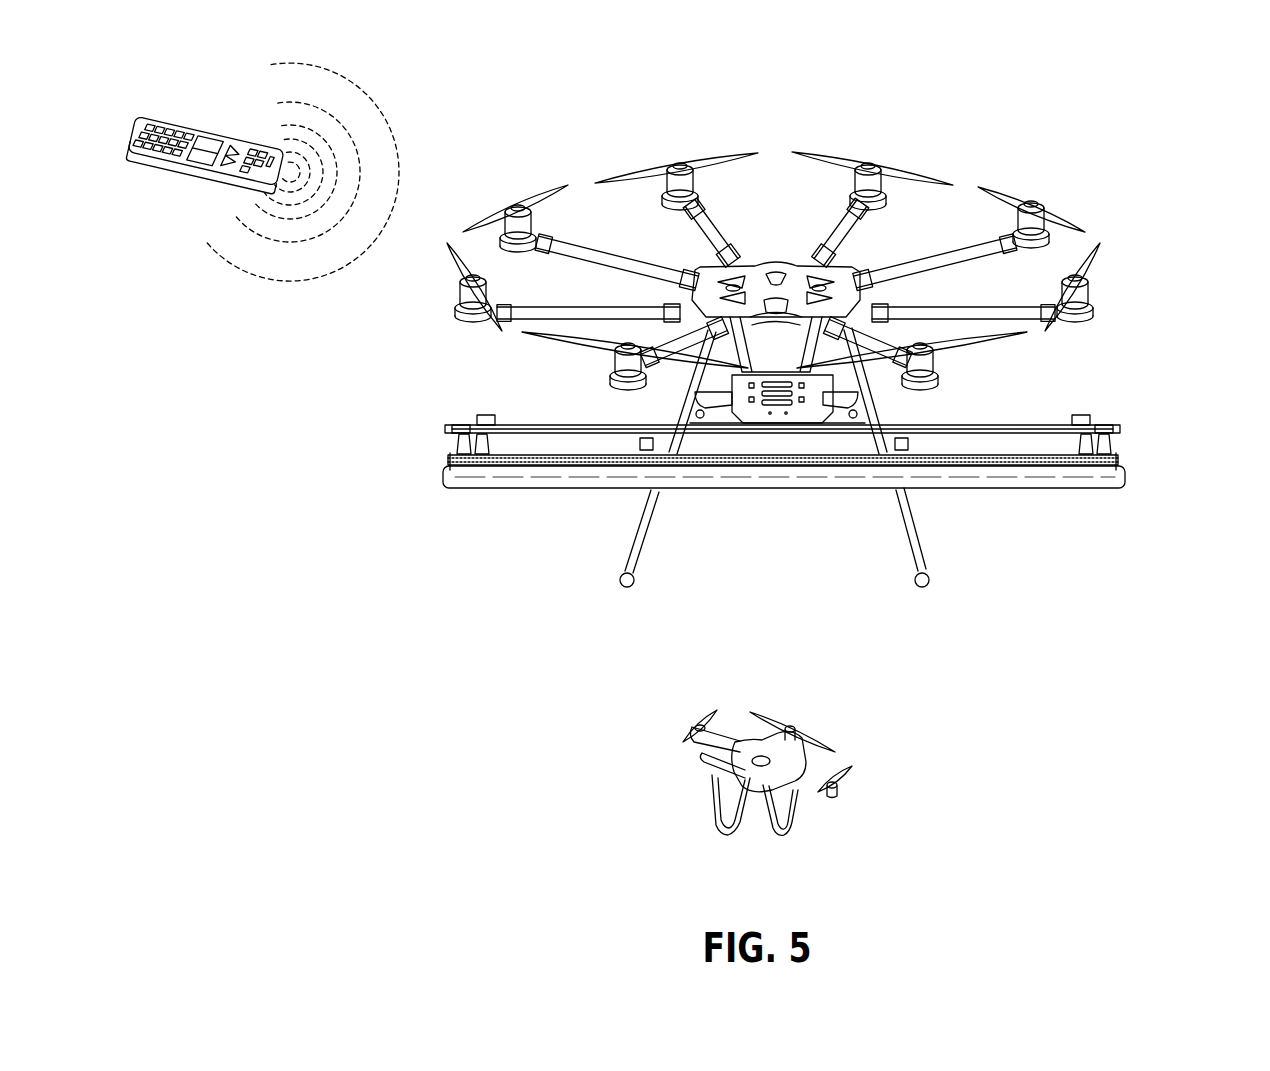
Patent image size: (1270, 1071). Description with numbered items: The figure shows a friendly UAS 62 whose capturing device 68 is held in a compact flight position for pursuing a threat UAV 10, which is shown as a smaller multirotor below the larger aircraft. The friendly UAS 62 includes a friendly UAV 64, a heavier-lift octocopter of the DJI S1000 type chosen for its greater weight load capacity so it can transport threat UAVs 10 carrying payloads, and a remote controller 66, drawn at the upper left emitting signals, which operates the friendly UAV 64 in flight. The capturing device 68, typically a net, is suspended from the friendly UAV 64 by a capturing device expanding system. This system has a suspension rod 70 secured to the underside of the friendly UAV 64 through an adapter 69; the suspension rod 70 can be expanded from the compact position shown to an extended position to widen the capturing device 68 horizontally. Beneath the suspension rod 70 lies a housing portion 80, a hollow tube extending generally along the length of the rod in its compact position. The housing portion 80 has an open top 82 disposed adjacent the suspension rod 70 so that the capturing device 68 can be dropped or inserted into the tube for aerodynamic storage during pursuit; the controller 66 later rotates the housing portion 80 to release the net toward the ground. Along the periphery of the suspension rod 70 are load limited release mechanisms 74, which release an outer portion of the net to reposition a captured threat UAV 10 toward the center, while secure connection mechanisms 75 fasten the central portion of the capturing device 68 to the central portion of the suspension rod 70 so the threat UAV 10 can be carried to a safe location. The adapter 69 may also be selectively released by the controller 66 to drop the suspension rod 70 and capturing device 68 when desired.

The threat UAV 10 is at (850, 783).
The friendly UAS 62 is at (812, 339).
The friendly UAV 64 is at (1092, 302).
The remote controller 66 is at (138, 140).
The capturing device 68 is at (786, 449).
The adapter 69 is at (775, 420).
The suspension rod 70 is at (1027, 422).
The load limited release mechanisms 74 is at (449, 455).
The secure connection mechanisms 75 is at (482, 457).
The housing portion 80 is at (605, 478).
The open top 82 is at (1058, 444).